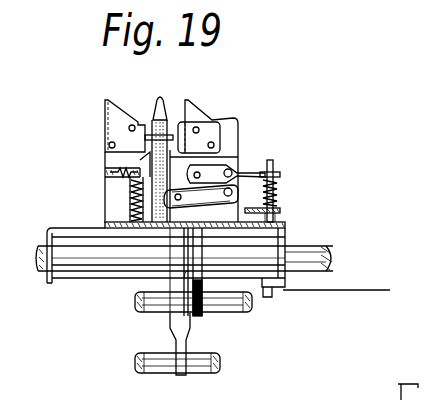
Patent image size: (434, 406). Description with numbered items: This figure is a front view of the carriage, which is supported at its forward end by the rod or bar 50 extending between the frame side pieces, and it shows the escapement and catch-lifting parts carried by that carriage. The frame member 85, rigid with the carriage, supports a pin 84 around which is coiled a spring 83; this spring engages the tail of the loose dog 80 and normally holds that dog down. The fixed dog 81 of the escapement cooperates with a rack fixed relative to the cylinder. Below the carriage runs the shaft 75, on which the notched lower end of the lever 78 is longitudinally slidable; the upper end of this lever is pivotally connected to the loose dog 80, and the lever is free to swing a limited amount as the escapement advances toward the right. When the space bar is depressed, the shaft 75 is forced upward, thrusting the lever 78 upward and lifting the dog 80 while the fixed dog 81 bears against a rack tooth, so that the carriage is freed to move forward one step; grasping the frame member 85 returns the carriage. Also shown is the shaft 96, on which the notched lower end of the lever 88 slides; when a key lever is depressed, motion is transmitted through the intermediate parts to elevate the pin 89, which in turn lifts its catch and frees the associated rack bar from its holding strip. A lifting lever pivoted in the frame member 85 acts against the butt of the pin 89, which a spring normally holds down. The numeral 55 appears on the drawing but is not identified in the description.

The rod or bar 50 is at (317, 243).
The lower lever 55 is at (213, 206).
The shaft 75 is at (252, 306).
The lever 78 is at (197, 281).
The loose dog 80 is at (222, 163).
The fixed dog 81 is at (140, 160).
The spring 83 is at (280, 190).
The pin 84 is at (274, 163).
The frame member 85 is at (244, 119).
The lever 88 is at (176, 324).
The pin 89 is at (164, 99).
The shaft 96 is at (208, 368).